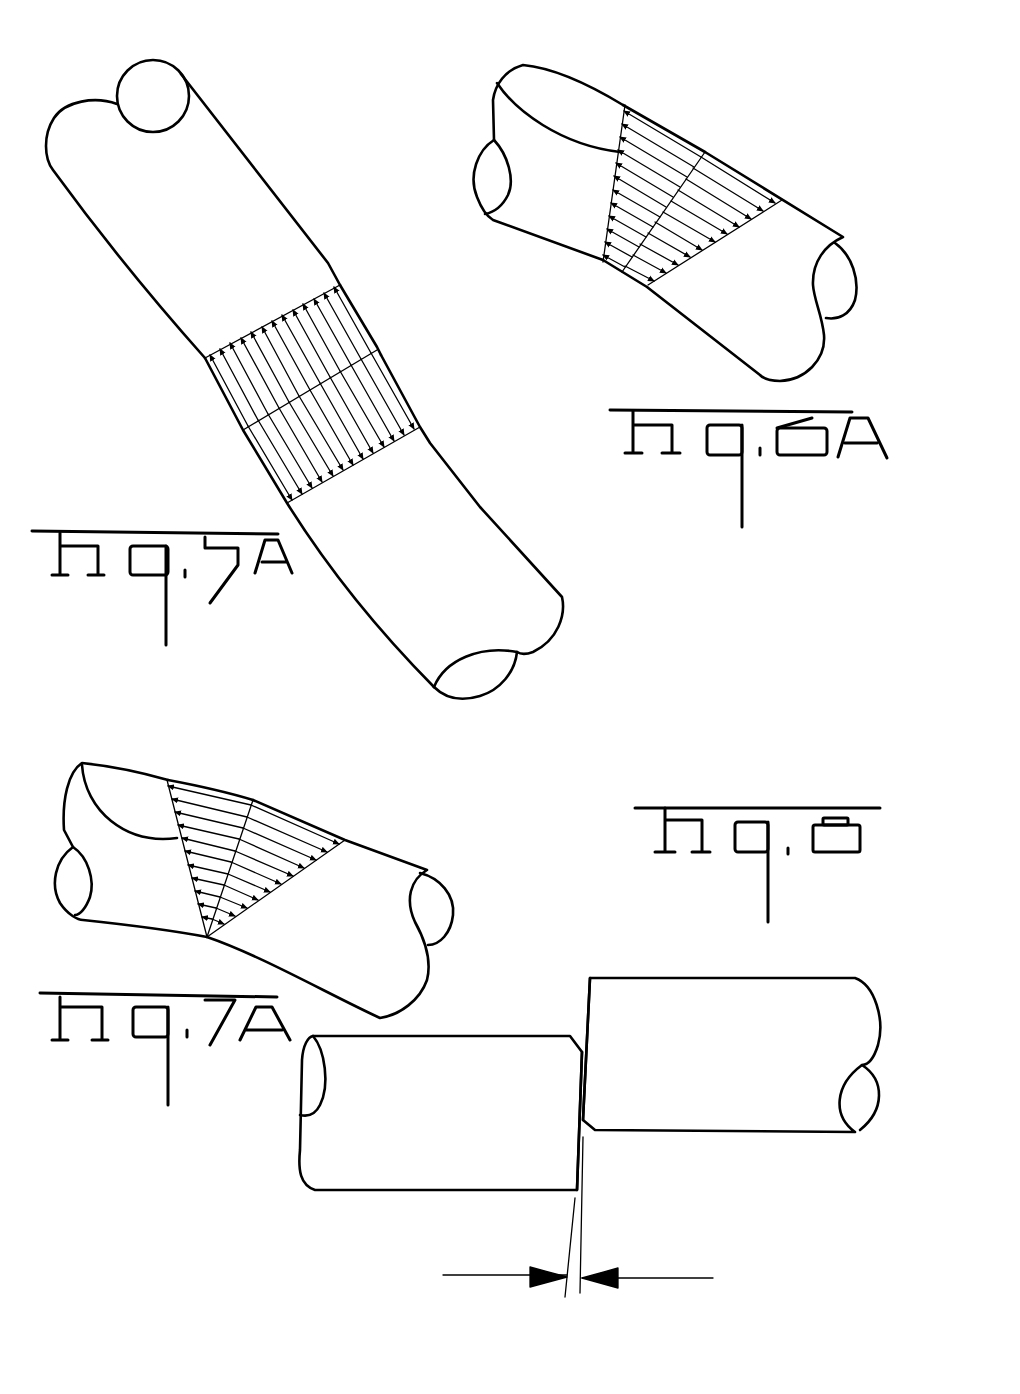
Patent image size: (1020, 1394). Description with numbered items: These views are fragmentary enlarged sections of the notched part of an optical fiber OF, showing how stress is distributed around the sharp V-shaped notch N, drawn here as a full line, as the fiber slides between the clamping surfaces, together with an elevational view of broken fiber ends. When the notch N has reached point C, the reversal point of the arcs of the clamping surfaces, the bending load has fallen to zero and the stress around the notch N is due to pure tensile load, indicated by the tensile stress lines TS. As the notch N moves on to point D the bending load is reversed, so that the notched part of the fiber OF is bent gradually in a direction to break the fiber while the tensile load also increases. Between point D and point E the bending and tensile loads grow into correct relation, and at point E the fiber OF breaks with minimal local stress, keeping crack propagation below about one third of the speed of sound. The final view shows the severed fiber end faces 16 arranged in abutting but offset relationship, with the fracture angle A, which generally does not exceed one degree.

In FIG. 5A, the tensile stress lines TS is at (283, 317).
In FIG. 6A, the tensile stress lines TS is at (506, 84).
In FIG. 7A, the tensile stress lines TS is at (82, 762).
In FIG. 5A, the point C is at (378, 348).
In FIG. 6A, the point D is at (712, 150).
In FIG. 7A, the point E is at (254, 800).
In FIG. 5A, the notch N is at (385, 352).
In FIG. 6A, the notch N is at (715, 150).
In FIG. 7A, the notch N is at (254, 803).
In FIG. 5A, the optical fiber OF is at (413, 498).
In FIG. 6A, the optical fiber OF is at (800, 240).
In FIG. 7A, the optical fiber OF is at (357, 930).
In FIG. 8, the optical fiber OF is at (755, 990).
In FIG. 8, the severed fiber end faces 16 is at (587, 1095).
In FIG. 8, the fracture angle A is at (578, 1240).